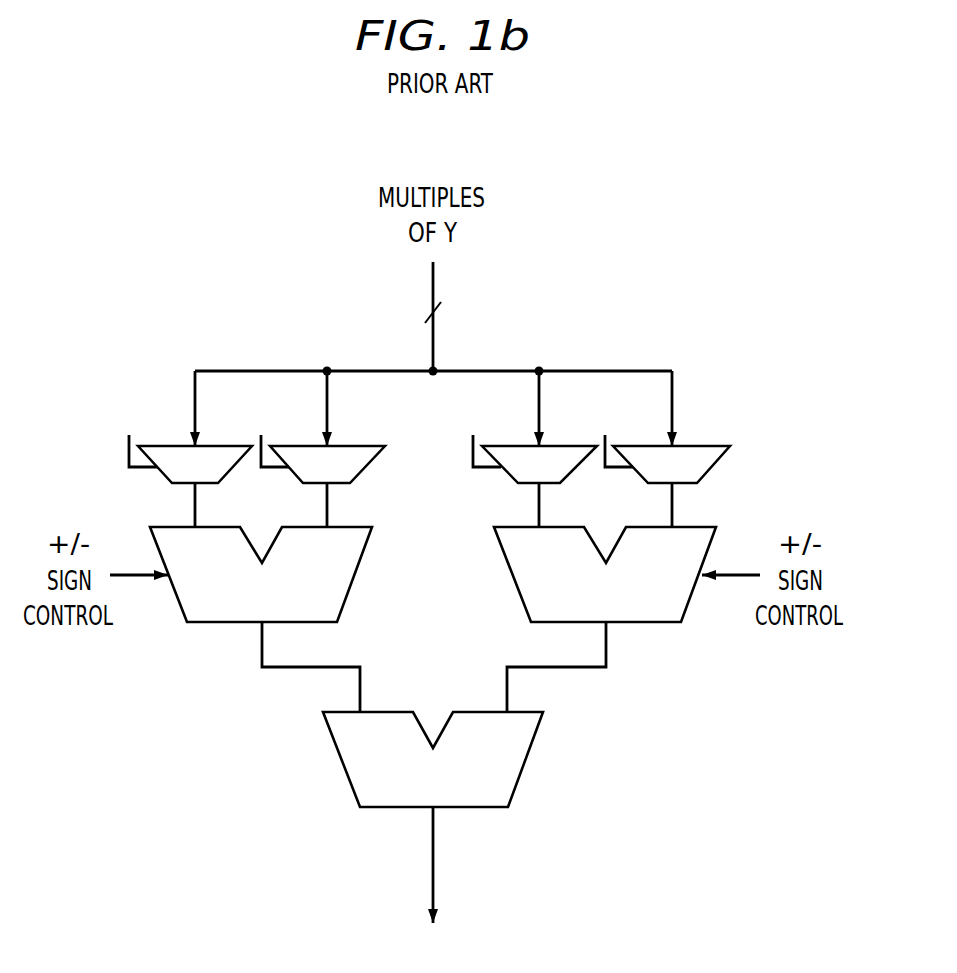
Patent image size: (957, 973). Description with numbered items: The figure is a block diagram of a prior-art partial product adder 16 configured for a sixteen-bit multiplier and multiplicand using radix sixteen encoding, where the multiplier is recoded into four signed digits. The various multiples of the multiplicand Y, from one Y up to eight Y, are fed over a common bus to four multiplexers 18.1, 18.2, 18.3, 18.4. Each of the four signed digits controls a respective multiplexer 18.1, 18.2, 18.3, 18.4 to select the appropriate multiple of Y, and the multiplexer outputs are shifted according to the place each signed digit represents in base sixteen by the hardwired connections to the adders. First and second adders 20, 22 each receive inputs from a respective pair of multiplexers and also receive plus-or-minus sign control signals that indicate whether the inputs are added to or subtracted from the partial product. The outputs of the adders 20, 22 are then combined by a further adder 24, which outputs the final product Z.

The partial product adder 16 is at (556, 182).
The multiplexer 18.1 is at (705, 474).
The multiplexer 18.2 is at (571, 474).
The multiplexer 18.3 is at (360, 474).
The multiplexer 18.4 is at (228, 474).
The first adder 20 is at (356, 572).
The second adder 22 is at (512, 574).
The adder 24 is at (525, 762).